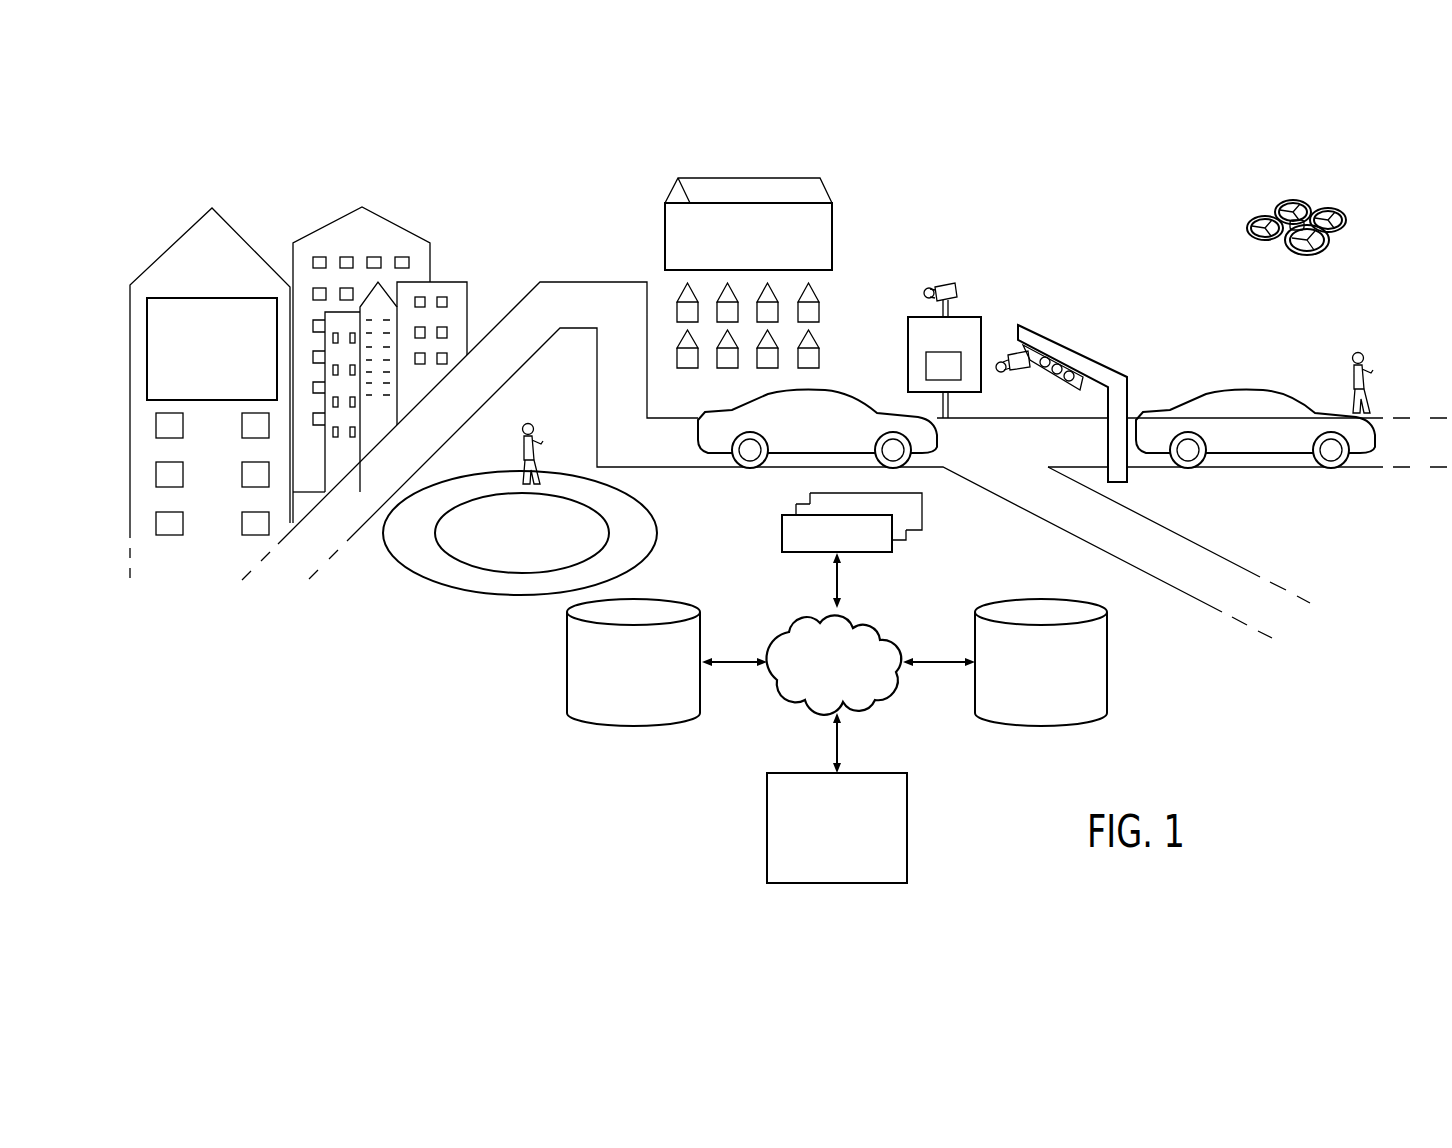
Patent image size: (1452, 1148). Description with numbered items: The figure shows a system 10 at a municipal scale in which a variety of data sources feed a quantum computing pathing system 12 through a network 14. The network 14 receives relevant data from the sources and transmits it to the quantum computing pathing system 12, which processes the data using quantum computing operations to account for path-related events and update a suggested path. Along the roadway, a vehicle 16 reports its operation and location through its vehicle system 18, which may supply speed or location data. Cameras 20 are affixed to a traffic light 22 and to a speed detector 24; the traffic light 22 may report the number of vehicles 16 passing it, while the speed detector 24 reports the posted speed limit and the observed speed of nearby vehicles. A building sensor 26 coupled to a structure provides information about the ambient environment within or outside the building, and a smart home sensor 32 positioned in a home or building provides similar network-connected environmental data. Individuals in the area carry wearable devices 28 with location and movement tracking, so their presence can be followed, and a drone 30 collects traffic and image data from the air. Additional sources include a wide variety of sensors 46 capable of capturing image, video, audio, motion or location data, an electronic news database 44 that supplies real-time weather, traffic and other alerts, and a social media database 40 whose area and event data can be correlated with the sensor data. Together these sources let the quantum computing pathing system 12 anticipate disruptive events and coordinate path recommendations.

The system 10 is at (276, 158).
The quantum computing pathing system 12 is at (908, 823).
The network 14 is at (880, 612).
The vehicle 16 is at (853, 407).
The vehicle system 18 is at (847, 399).
The camera 20 is at (937, 283).
The traffic light 22 is at (1060, 358).
The speed detector 24 is at (983, 352).
The building sensor 26 is at (192, 400).
The wearable device 28 is at (543, 442).
The drone 30 is at (1341, 244).
The smart home sensor 32 is at (833, 238).
The social media database 40 is at (1075, 596).
The electronic news database 44 is at (567, 658).
The sensors 46 is at (907, 516).